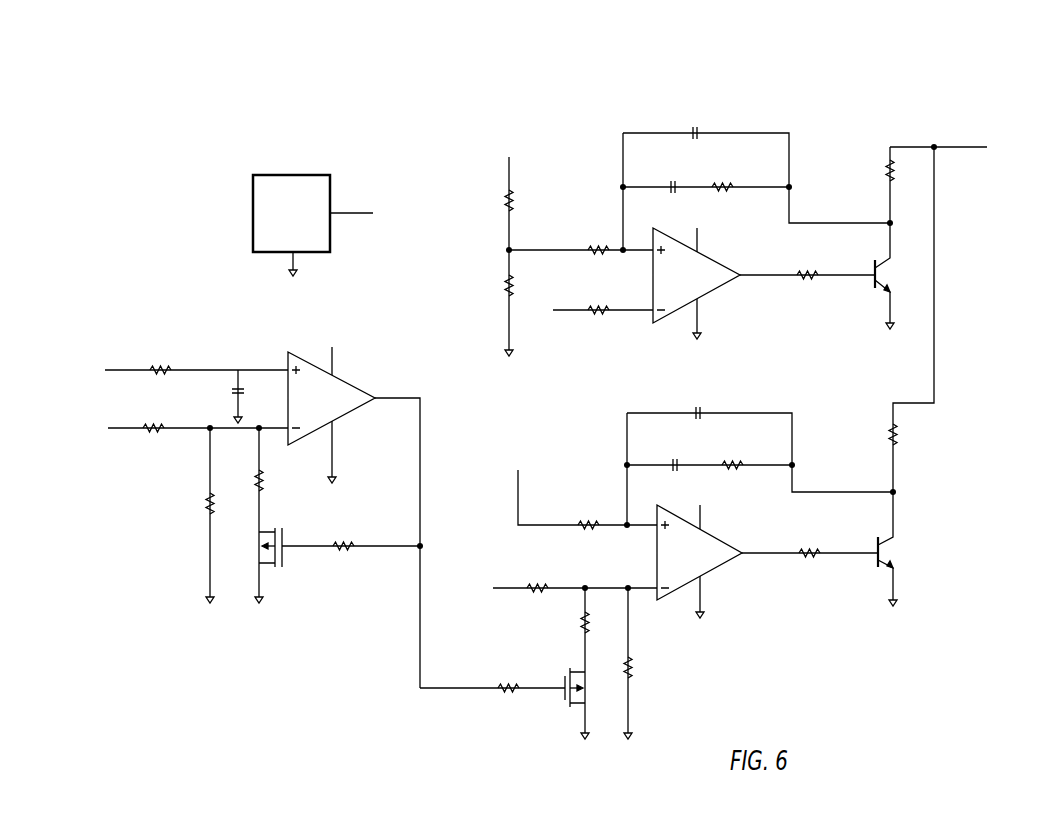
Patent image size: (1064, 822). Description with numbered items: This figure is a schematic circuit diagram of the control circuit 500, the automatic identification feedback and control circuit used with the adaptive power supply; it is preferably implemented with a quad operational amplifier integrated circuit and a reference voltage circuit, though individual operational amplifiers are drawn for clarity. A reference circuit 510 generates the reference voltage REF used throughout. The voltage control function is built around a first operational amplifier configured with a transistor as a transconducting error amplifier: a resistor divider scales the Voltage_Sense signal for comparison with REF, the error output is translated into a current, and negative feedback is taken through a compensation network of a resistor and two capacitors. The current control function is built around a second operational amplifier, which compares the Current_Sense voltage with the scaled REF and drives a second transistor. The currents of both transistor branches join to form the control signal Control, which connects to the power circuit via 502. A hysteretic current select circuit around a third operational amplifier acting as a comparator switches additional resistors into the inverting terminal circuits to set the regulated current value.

The control circuit 500 is at (594, 82).
The connection to the power circuit 502 is at (990, 118).
The reference circuit 510 is at (305, 175).